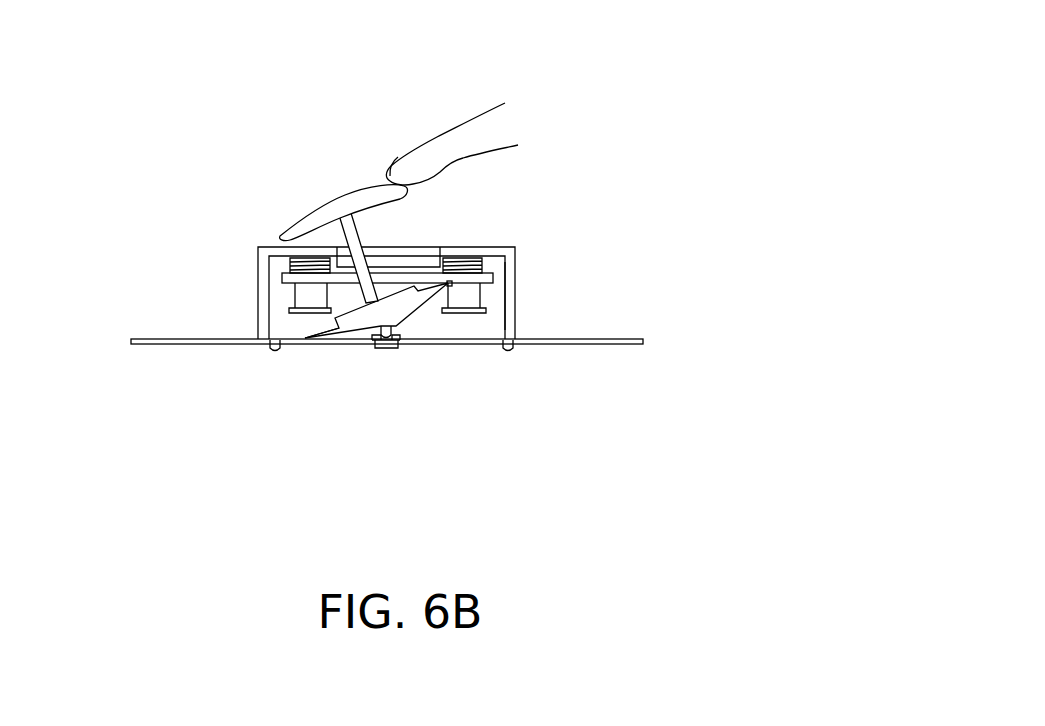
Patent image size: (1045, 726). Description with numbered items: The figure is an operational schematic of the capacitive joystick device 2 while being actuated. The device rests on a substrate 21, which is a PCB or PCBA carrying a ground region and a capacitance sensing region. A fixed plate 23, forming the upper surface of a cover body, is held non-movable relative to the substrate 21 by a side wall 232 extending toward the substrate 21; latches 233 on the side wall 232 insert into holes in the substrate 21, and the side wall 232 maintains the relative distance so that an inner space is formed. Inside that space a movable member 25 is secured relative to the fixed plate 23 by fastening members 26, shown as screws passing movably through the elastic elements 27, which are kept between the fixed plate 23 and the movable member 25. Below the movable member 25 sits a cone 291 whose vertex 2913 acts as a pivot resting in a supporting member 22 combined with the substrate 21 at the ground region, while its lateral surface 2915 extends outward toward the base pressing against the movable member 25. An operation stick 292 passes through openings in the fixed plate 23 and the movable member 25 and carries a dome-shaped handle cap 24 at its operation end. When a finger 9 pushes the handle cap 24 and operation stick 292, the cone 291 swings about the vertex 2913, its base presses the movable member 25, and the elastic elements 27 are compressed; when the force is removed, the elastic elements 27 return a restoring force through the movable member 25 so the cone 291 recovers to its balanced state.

The capacitive joystick device 2 is at (694, 64).
The finger 9 is at (452, 138).
The substrate 21 is at (644, 343).
The supporting member 22 is at (390, 348).
The fixed plate 23 is at (425, 294).
The handle cap 24 is at (368, 193).
The movable member 25 is at (285, 281).
The fastening members 26 is at (302, 314).
The elastic elements 27 is at (290, 266).
The side wall 232 is at (511, 312).
The latches 233 is at (270, 351).
The cone 291 is at (370, 364).
The operation stick 292 is at (357, 226).
The vertex 2913 is at (387, 351).
The lateral surface 2915 is at (343, 340).